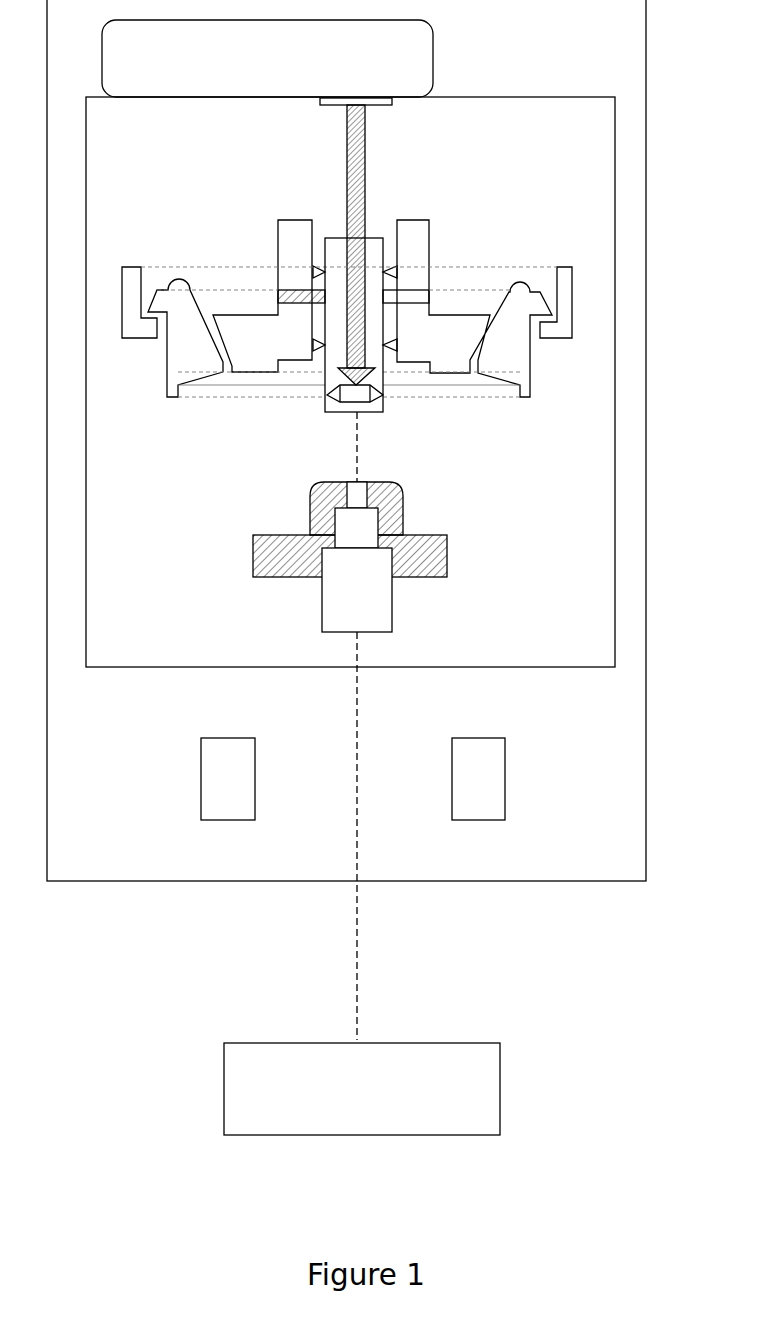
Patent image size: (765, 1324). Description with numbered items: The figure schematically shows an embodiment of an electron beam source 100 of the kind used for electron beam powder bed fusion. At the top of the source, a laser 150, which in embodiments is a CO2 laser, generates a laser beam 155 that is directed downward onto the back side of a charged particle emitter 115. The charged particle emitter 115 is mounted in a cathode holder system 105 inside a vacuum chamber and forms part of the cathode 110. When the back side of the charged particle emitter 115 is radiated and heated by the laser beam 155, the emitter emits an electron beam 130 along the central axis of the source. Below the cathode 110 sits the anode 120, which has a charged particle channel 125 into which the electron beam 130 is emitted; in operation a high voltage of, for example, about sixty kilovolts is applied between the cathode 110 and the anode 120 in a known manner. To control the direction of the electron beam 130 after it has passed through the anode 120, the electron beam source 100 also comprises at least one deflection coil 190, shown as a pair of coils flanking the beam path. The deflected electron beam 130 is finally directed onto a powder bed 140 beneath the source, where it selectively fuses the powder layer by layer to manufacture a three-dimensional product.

The electron beam source 100 is at (573, 55).
The cathode holder system 105 is at (415, 220).
The cathode 110 is at (325, 405).
The charged particle emitter 115 is at (363, 403).
The anode 120 is at (403, 513).
The charged particle channel 125 is at (338, 592).
The electron beam 130 is at (360, 943).
The powder bed 140 is at (362, 1089).
The laser 150 is at (267, 58).
The laser beam 155 is at (347, 175).
The deflection coil 190 is at (201, 762).